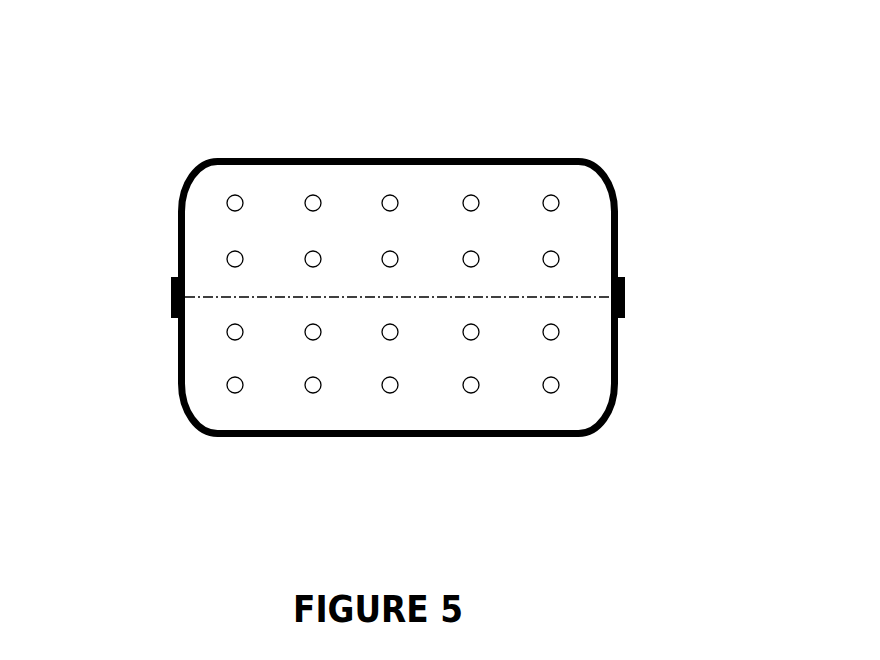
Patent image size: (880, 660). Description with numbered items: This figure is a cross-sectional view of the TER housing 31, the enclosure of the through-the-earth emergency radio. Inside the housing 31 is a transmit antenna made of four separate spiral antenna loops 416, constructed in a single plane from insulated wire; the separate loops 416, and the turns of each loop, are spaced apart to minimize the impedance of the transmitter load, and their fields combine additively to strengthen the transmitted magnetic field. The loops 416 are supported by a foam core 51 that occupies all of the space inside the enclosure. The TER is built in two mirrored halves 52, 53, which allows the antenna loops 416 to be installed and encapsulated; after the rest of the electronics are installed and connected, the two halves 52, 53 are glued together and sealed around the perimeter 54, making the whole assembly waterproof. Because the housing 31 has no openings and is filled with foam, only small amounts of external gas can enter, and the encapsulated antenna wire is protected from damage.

The TER housing 31 is at (418, 157).
The foam core 51 is at (517, 195).
The first mirrored half 52 is at (173, 212).
The second mirrored half 53 is at (172, 380).
The perimeter 54 is at (167, 303).
The antenna loops 416 is at (572, 203).